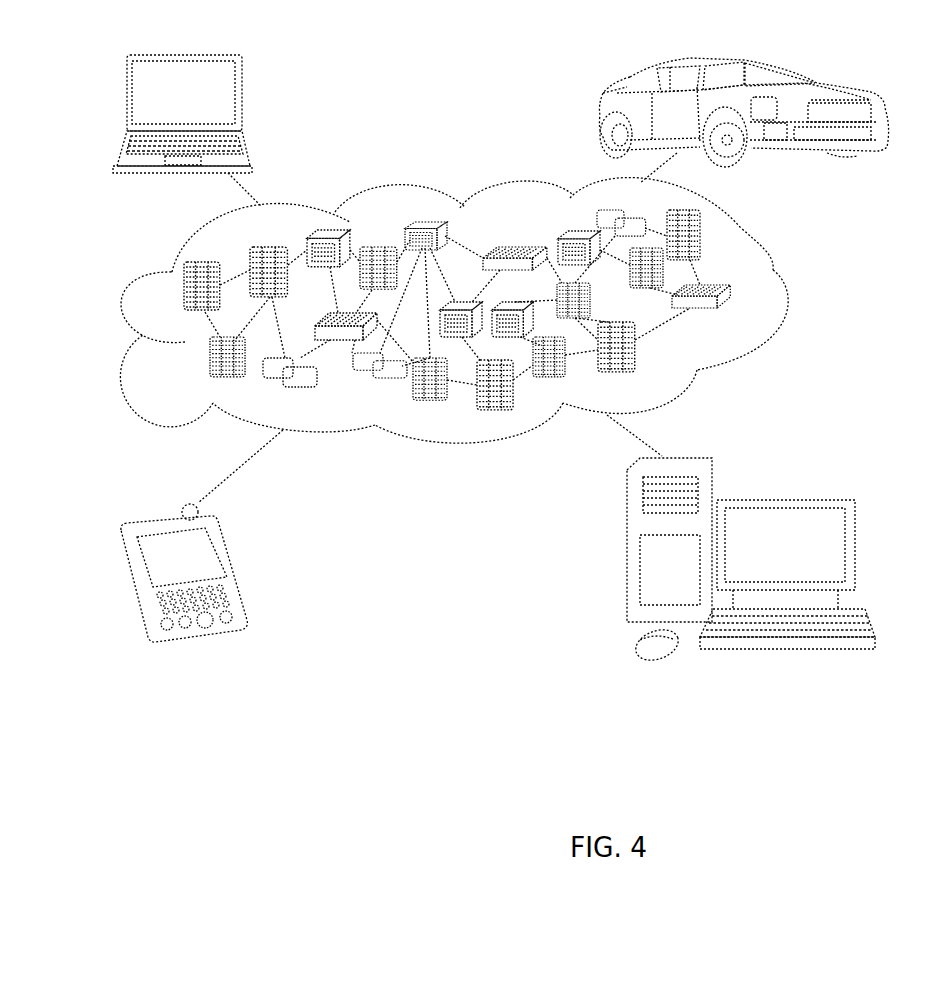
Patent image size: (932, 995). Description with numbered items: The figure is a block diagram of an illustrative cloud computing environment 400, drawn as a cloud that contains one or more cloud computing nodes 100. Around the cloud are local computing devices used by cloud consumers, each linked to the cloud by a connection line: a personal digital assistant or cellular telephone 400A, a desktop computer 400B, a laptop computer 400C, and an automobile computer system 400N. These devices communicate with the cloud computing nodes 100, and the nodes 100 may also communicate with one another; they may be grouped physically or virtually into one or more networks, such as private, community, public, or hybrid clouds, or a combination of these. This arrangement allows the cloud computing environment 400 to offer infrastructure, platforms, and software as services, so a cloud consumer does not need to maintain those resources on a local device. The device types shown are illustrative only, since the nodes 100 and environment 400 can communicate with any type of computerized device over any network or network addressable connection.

The cloud computing environment 400 is at (786, 292).
The cloud computing nodes 100 is at (738, 316).
The personal digital assistant or cellular telephone 400A is at (232, 567).
The desktop computer 400B is at (783, 498).
The laptop computer 400C is at (243, 101).
The automobile computer system 400N is at (600, 112).